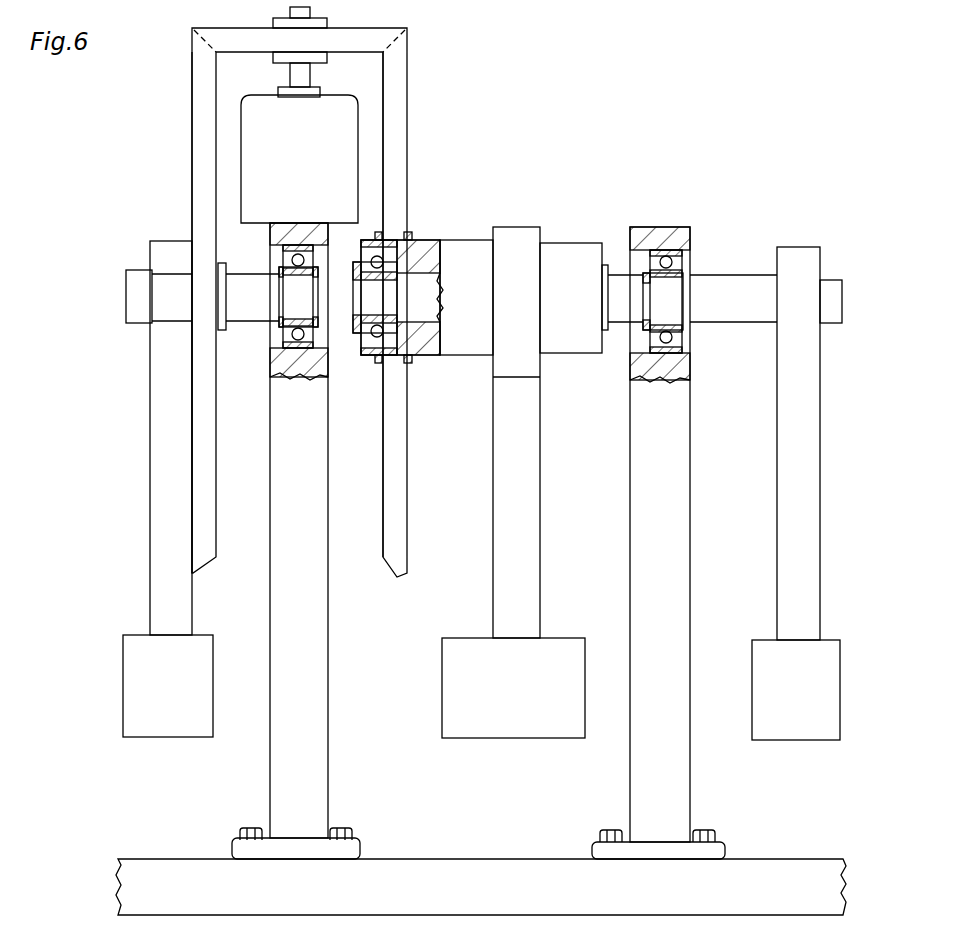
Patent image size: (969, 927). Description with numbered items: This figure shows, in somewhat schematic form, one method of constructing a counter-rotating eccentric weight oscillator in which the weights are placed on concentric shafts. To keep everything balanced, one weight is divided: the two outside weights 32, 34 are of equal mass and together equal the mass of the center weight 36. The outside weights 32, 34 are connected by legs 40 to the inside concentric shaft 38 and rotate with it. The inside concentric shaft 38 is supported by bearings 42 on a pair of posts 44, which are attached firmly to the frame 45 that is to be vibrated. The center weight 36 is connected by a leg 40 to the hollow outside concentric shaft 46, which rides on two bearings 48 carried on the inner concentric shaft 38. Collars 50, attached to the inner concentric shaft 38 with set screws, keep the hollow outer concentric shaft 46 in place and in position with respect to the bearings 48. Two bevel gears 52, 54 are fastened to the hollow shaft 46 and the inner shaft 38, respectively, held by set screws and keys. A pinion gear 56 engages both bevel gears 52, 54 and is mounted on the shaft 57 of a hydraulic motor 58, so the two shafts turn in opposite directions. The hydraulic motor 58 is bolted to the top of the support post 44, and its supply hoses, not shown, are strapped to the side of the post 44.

The outside weight 32 is at (130, 712).
The outside weight 34 is at (827, 715).
The center weight 36 is at (445, 712).
The inside concentric shaft 38 is at (835, 313).
The leg 40 is at (157, 515).
The bearing 42 is at (283, 342).
The post 44 is at (680, 558).
The frame 45 is at (193, 865).
The hollow outside concentric shaft 46 is at (557, 340).
The bearing 48 is at (400, 323).
The collar 50 is at (390, 267).
The bevel gear 52 is at (203, 168).
The bevel gear 54 is at (397, 120).
The pinion gear 56 is at (377, 32).
The shaft 57 is at (305, 72).
The hydraulic motor 58 is at (347, 155).